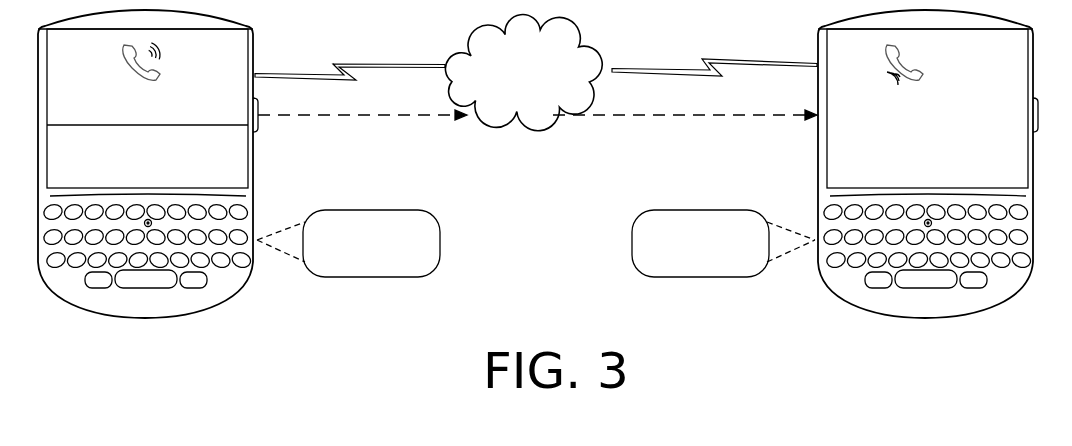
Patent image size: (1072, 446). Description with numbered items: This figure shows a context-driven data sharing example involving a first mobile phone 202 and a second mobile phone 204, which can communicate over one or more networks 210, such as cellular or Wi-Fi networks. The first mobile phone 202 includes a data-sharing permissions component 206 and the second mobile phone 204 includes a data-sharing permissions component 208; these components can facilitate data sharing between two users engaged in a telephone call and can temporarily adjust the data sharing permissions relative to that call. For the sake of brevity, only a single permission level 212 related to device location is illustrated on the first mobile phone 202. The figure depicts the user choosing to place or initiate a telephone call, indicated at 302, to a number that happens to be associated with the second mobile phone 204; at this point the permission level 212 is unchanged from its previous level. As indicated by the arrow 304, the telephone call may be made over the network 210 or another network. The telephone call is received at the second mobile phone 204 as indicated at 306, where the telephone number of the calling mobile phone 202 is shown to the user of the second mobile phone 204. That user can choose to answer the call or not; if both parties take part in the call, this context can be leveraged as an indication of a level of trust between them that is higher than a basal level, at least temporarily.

The first mobile phone 202 is at (265, 42).
The second mobile phone 204 is at (807, 43).
The data-sharing permissions component 206 is at (348, 243).
The data-sharing permissions component 208 is at (723, 243).
The network 210 is at (523, 73).
The permission level 212 is at (236, 173).
The telephone call initiation 302 is at (152, 69).
The arrow 304 is at (678, 116).
The received telephone call indication 306 is at (893, 152).